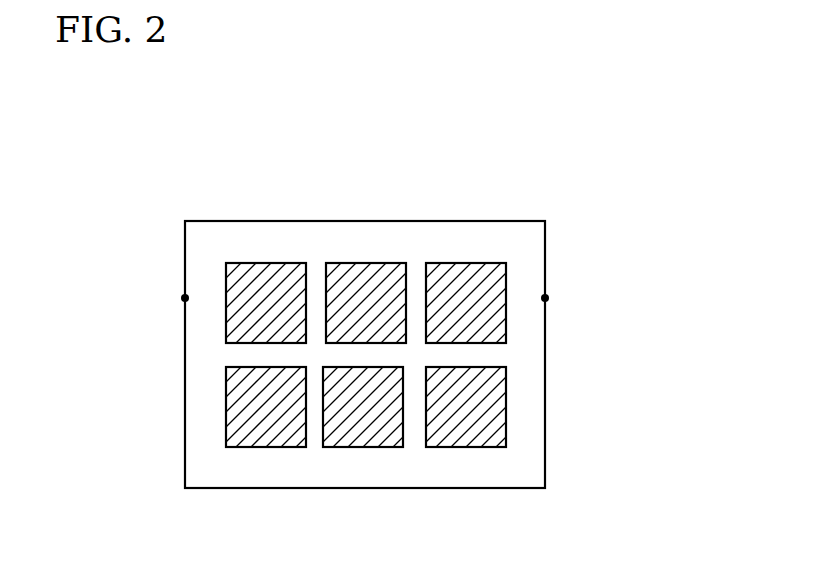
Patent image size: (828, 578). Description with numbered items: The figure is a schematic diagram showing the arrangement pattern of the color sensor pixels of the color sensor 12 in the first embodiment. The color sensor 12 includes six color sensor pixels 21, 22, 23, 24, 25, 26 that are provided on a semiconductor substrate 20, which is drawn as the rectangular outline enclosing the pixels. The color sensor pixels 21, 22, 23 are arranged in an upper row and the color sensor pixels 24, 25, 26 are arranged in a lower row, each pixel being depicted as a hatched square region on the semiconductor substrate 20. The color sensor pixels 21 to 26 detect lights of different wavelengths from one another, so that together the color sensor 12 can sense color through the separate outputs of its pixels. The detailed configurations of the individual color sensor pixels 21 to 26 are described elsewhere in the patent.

The color sensor 12 is at (427, 332).
The semiconductor substrate 20 is at (515, 221).
The color sensor pixel 21 is at (275, 263).
The color sensor pixel 22 is at (373, 263).
The color sensor pixel 23 is at (468, 263).
The color sensor pixel 24 is at (268, 447).
The color sensor pixel 25 is at (366, 447).
The color sensor pixel 26 is at (461, 447).